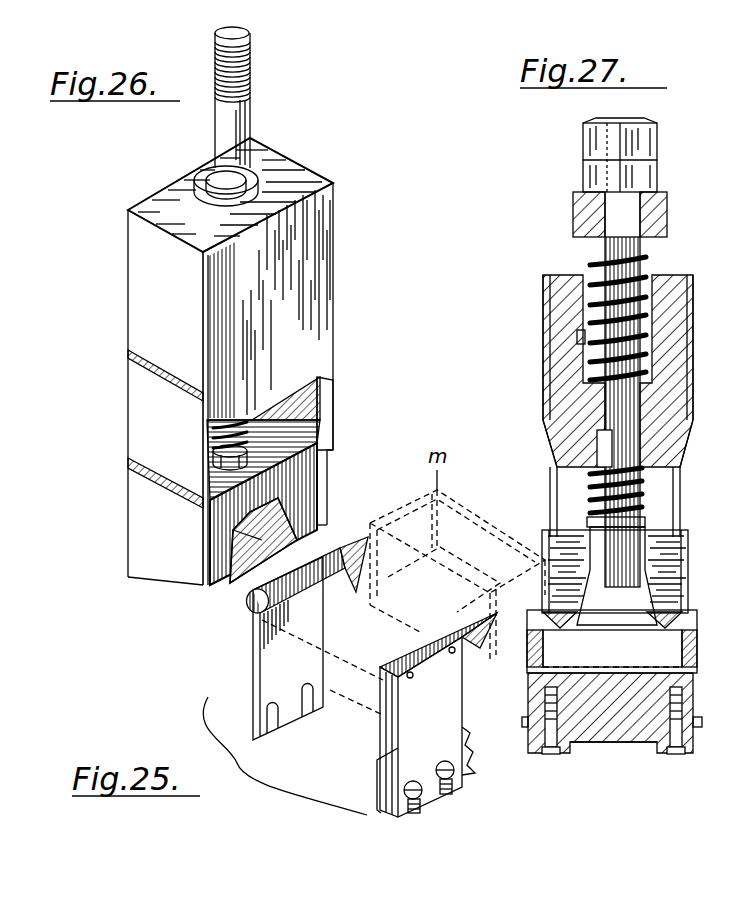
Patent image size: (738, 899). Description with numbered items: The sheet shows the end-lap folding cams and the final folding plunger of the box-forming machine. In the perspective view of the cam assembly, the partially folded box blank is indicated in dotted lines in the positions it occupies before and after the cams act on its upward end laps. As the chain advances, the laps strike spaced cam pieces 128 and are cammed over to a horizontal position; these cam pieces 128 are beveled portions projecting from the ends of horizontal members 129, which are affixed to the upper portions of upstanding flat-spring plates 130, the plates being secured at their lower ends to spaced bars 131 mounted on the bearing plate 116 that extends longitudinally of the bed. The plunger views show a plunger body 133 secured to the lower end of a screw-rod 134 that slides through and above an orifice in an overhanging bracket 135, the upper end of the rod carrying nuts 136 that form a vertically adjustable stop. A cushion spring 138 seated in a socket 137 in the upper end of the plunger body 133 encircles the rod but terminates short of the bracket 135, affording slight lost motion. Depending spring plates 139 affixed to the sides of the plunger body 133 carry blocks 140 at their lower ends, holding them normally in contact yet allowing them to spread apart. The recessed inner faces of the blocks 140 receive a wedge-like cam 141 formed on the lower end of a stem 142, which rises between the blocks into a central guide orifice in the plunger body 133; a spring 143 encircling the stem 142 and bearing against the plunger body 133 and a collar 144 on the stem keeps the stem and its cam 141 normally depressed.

In FIG. 27, the bearing plate 116 is at (604, 740).
In FIG. 25, the cam pieces 128 is at (340, 545).
In FIG. 27, the cam pieces 128 is at (657, 630).
In FIG. 25, the horizontal members 129 is at (258, 600).
In FIG. 27, the horizontal members 129 is at (555, 630).
In FIG. 25, the flat-spring plates 130 is at (257, 672).
In FIG. 27, the flat-spring plates 130 is at (527, 755).
In FIG. 25, the spaced bars 131 is at (377, 780).
In FIG. 27, the spaced bars 131 is at (570, 752).
In FIG. 26, the plunger body 133 is at (307, 339).
In FIG. 27, the plunger body 133 is at (560, 362).
In FIG. 26, the screw-rod 134 is at (250, 107).
In FIG. 27, the screw-rod 134 is at (603, 243).
In FIG. 27, the overhanging bracket 135 is at (573, 200).
In FIG. 27, the nuts 136 is at (583, 141).
In FIG. 27, the socket 137 is at (573, 307).
In FIG. 26, the cushion spring 138 is at (270, 177).
In FIG. 27, the cushion spring 138 is at (577, 337).
In FIG. 26, the spring plates 139 is at (133, 376).
In FIG. 27, the spring plates 139 is at (543, 405).
In FIG. 26, the blocks 140 is at (217, 522).
In FIG. 27, the blocks 140 is at (680, 578).
In FIG. 26, the wedge-like cam 141 is at (260, 547).
In FIG. 27, the wedge-like cam 141 is at (617, 576).
In FIG. 27, the stem 142 is at (605, 460).
In FIG. 26, the spring 143 is at (212, 448).
In FIG. 27, the spring 143 is at (587, 479).
In FIG. 26, the collar 144 is at (217, 463).
In FIG. 27, the collar 144 is at (645, 520).